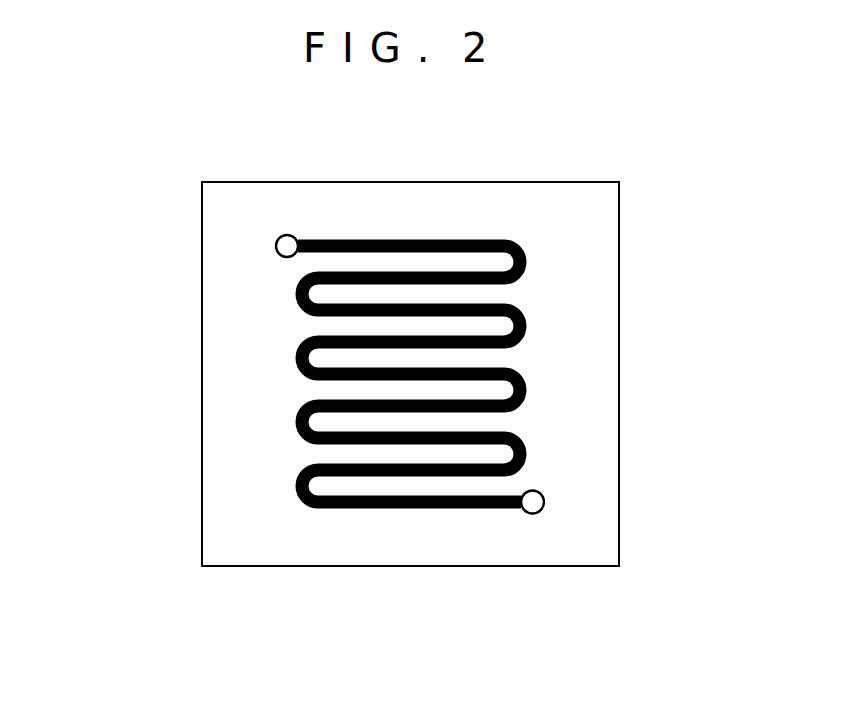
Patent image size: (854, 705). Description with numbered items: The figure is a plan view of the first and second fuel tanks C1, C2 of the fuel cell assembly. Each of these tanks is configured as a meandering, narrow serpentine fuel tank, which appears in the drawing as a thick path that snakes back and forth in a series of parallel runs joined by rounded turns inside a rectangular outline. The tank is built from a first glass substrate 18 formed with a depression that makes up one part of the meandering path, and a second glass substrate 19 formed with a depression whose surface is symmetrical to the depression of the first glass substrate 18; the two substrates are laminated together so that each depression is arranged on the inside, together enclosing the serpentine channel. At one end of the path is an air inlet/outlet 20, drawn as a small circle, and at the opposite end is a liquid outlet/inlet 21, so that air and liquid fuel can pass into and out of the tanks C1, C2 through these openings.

The first glass substrate 18 is at (324, 374).
The second glass substrate 19 is at (202, 383).
The air inlet/outlet 20 is at (291, 244).
The liquid outlet/inlet 21 is at (538, 501).
The first fuel tank C1 is at (410, 623).
The second fuel tank C2 is at (351, 572).